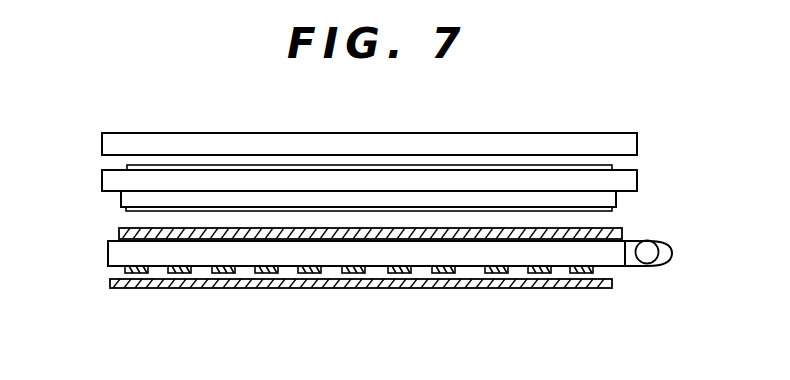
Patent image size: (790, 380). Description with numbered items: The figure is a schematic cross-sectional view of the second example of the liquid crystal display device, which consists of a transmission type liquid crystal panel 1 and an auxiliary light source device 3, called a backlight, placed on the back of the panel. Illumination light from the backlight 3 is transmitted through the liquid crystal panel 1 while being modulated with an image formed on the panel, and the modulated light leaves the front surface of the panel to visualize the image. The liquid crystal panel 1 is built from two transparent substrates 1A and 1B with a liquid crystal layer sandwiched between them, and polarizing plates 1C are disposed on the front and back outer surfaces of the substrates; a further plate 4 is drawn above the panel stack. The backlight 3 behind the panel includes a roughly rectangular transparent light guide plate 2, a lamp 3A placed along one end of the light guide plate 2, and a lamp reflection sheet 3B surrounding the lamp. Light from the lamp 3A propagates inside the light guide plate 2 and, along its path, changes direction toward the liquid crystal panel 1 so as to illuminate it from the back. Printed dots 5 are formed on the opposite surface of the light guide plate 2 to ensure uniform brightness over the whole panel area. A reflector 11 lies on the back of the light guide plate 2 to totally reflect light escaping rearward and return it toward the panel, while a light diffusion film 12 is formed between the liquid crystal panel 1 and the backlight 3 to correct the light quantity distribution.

The transmission type liquid crystal panel 1 is at (647, 177).
The transparent substrate 1A is at (102, 183).
The transparent substrate 1B is at (120, 200).
The polarizing plates 1C is at (480, 207).
The light guide plate 2 is at (250, 258).
The auxiliary light source device 3 is at (101, 257).
The lamp 3A is at (657, 261).
The lamp reflection sheet 3B is at (672, 250).
The protective plate 4 is at (612, 133).
The printed dots 5 is at (175, 274).
The reflector 11 is at (383, 288).
The light diffusion film 12 is at (622, 234).